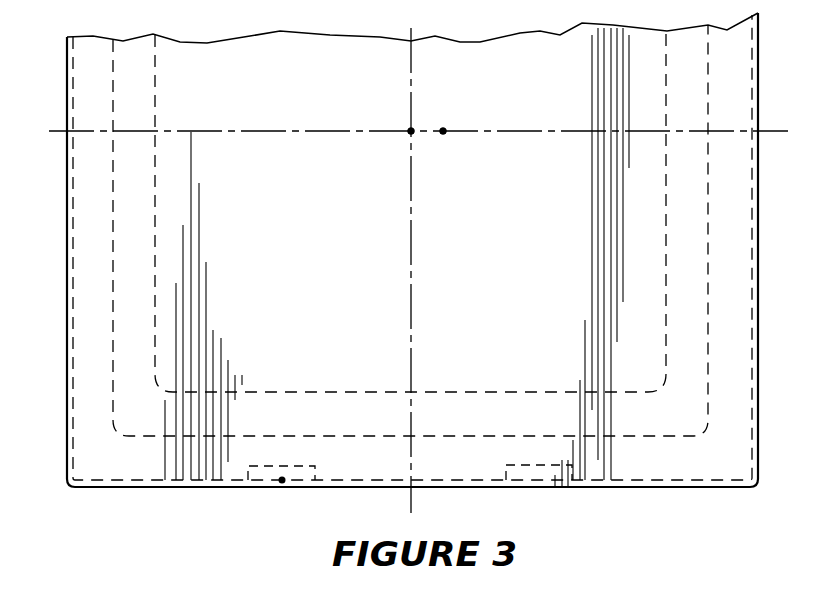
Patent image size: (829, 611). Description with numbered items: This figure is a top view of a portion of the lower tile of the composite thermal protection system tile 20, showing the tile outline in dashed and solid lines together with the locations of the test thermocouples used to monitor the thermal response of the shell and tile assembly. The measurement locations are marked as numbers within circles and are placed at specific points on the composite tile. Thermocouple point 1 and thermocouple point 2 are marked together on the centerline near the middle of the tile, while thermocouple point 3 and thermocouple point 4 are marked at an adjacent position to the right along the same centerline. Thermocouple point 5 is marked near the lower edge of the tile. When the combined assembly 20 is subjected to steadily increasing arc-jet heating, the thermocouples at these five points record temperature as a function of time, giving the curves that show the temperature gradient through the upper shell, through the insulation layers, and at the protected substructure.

The composite thermal protection system tile 20 is at (758, 489).
The thermocouple point 1 is at (386, 119).
The thermocouple point 2 is at (400, 119).
The thermocouple point 3 is at (453, 143).
The thermocouple point 4 is at (467, 141).
The thermocouple point 5 is at (290, 495).